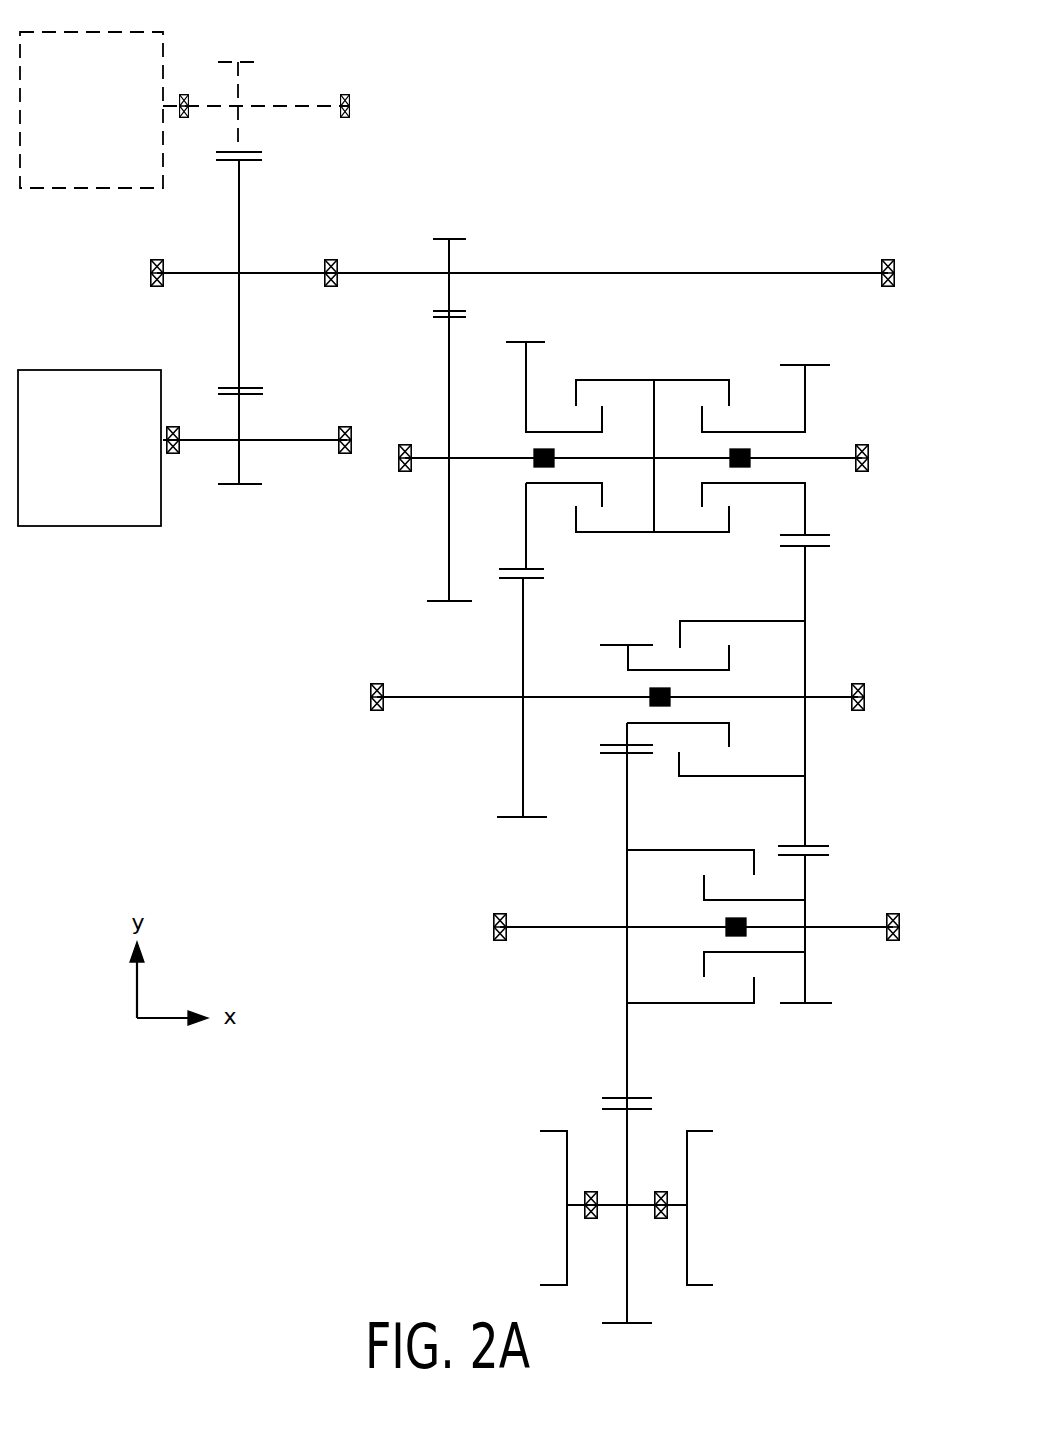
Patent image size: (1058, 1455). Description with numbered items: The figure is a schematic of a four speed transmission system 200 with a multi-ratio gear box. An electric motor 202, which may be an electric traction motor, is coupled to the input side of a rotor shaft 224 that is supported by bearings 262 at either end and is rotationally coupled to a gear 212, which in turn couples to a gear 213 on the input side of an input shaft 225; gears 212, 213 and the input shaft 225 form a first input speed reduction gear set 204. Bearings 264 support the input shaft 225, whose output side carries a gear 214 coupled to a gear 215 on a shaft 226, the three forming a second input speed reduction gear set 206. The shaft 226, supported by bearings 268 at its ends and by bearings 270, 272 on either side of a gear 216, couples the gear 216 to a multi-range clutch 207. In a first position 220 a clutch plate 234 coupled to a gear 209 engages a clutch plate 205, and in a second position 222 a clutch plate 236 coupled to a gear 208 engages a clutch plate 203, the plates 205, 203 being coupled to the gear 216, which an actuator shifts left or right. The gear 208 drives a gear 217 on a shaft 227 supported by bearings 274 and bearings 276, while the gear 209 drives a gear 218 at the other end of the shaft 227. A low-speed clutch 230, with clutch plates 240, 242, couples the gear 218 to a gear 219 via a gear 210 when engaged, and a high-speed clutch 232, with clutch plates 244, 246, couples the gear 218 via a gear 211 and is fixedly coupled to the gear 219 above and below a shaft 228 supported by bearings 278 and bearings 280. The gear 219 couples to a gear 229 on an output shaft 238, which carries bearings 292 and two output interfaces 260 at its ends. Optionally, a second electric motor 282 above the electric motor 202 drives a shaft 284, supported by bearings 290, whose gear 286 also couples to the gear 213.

The transmission system 200 is at (730, 100).
The electric motor 202 is at (89, 448).
The clutch plate 203 is at (578, 522).
The first input speed reduction gear set 204 is at (222, 356).
The clutch plate 205 is at (730, 396).
The second input speed reduction gear set 206 is at (420, 372).
The multi-range clutch 207 is at (708, 354).
The gear 208 is at (522, 530).
The gear 209 is at (806, 516).
The gear 210 is at (610, 744).
The gear 211 is at (816, 860).
The gear 212 is at (240, 432).
The gear 213 is at (240, 240).
The gear 214 is at (450, 239).
The gear 215 is at (450, 388).
The gear 216 is at (656, 385).
The gear 217 is at (525, 642).
The gear 218 is at (807, 760).
The gear 219 is at (629, 820).
The first position 220 is at (668, 492).
The second position 222 is at (620, 428).
The shaft 224 is at (270, 442).
The input shaft 225 is at (565, 273).
The shaft 226 is at (464, 458).
The shaft 227 is at (424, 697).
The shaft 228 is at (560, 927).
The gear 229 is at (656, 1100).
The low-speed clutch 230 is at (788, 672).
The high-speed clutch 232 is at (646, 950).
The clutch plate 234 is at (652, 418).
The clutch plate 236 is at (604, 496).
The output shaft 238 is at (638, 1208).
The clutch plate 240 is at (683, 620).
The clutch plate 242 is at (731, 658).
The clutch plate 244 is at (757, 850).
The clutch plate 246 is at (702, 900).
The output interfaces 260 is at (540, 1204).
The bearings 262 is at (347, 426).
The bearings 264 is at (160, 258).
The bearings 268 is at (406, 443).
The bearing 270 is at (544, 448).
The bearing 272 is at (741, 448).
The bearings 274 is at (380, 682).
The bearings 276 is at (664, 684).
The bearings 278 is at (502, 912).
The bearings 280 is at (741, 914).
The second electric motor 282 is at (91, 110).
The shaft 284 is at (292, 106).
The gear 286 is at (247, 60).
The bearings 290 is at (185, 93).
The bearings 292 is at (592, 1190).